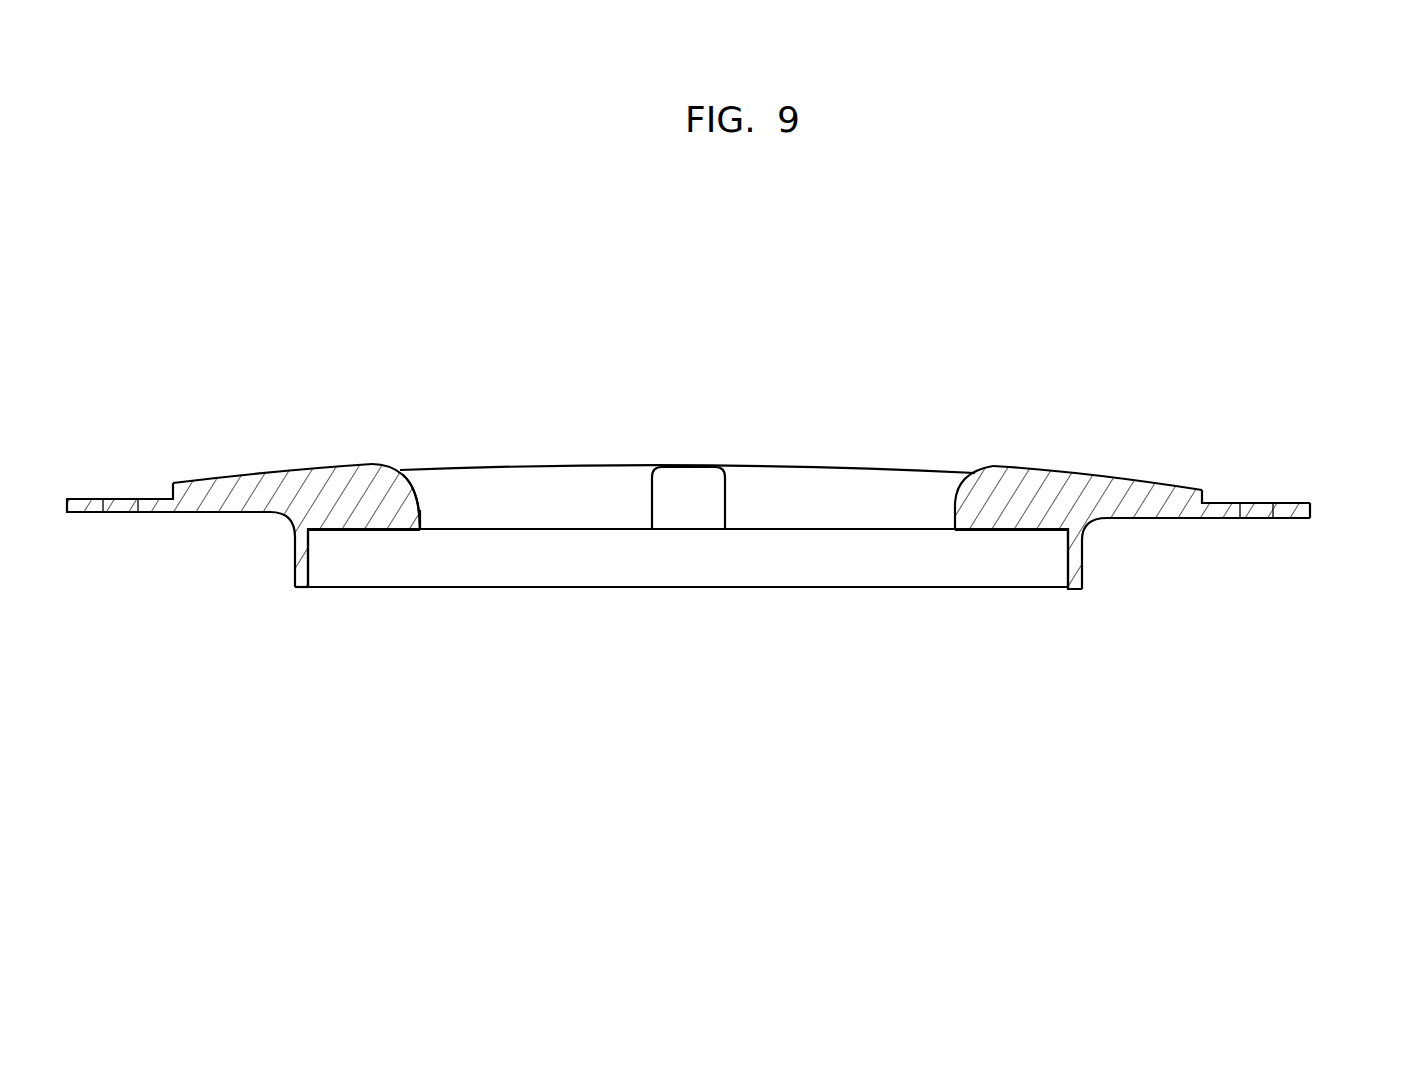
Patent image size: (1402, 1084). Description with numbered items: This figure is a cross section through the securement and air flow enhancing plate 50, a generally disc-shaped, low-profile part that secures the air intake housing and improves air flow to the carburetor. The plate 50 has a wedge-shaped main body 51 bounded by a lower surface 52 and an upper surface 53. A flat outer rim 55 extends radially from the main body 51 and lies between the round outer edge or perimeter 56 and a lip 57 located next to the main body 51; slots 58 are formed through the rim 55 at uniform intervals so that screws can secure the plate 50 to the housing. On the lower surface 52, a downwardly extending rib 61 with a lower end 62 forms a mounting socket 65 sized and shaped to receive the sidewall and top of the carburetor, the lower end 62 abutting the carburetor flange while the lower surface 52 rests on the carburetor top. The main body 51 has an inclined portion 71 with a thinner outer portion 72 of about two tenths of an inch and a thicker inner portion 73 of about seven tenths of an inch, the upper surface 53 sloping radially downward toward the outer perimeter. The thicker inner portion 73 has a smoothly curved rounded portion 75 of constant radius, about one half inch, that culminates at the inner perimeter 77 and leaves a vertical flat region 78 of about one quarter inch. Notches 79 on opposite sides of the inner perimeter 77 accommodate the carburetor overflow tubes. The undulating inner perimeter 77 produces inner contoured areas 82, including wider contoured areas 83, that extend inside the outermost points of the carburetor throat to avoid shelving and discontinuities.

The securement and air flow enhancing plate 50 is at (1008, 452).
The main body 51 is at (1075, 497).
The lower surface 52 is at (1137, 518).
The upper surface 53 is at (1125, 483).
The flat outer rim 55 is at (1230, 500).
The outer edge or perimeter 56 is at (1310, 510).
The lip 57 is at (1207, 497).
The slots 58 is at (1245, 518).
The rib 61 is at (297, 558).
The lower end 62 is at (297, 585).
The mounting socket 65 is at (488, 569).
The inclined portion 71 is at (283, 480).
The thinner outer portion 72 is at (207, 487).
The thicker inner portion 73 is at (370, 476).
The rounded portion 75 is at (414, 480).
The inner perimeter 77 is at (423, 502).
The vertical flat region 78 is at (422, 518).
The notches 79 is at (683, 483).
The inner contoured areas 82 is at (1017, 532).
The wider contoured areas 83 is at (973, 532).